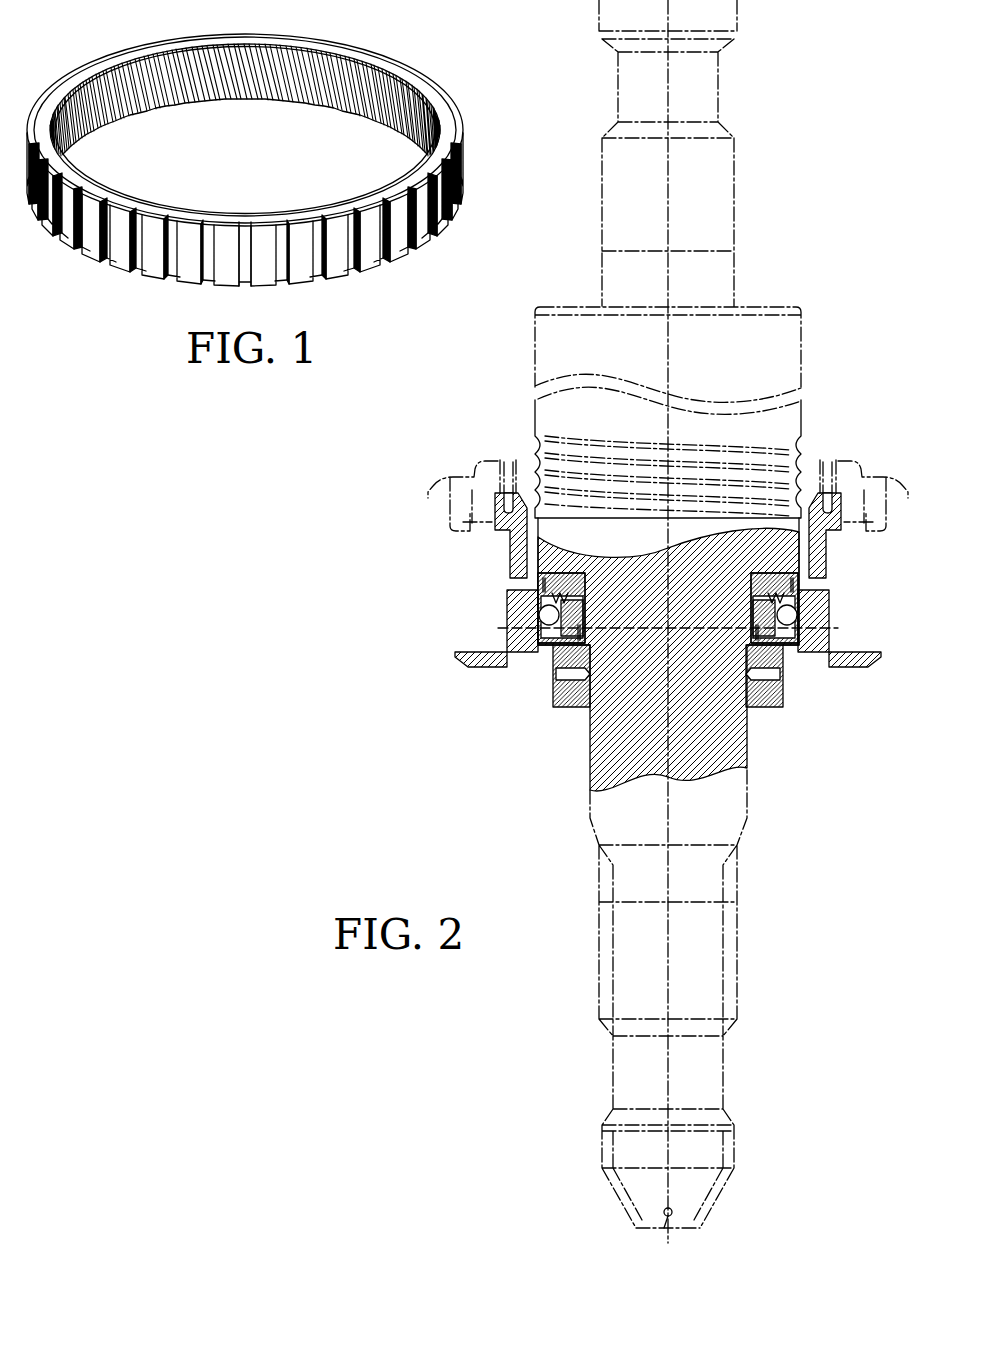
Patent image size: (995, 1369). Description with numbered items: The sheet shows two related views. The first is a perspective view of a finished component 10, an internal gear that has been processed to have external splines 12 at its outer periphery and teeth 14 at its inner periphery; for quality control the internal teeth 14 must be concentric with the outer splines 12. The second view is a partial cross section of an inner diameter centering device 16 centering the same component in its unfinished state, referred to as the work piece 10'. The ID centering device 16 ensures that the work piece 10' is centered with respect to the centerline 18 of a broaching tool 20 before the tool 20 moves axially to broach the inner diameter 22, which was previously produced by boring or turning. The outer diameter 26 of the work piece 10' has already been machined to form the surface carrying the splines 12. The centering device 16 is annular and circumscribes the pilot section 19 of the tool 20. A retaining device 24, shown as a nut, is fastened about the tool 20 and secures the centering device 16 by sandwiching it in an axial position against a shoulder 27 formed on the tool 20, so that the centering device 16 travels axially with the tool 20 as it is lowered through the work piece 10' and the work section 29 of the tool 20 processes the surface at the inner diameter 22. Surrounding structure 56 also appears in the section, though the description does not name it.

In FIG. 1, the finished component 10 is at (245, 122).
In FIG. 1, the splines 12 is at (431, 232).
In FIG. 1, the teeth 14 is at (232, 96).
In FIG. 2, the inner diameter centering device 16 is at (495, 625).
In FIG. 2, the centerline 18 is at (668, 987).
In FIG. 2, the pilot section 19 is at (727, 583).
In FIG. 2, the broaching tool 20 is at (806, 412).
In FIG. 2, the inner diameter 22 is at (535, 690).
In FIG. 2, the retaining device 24 is at (779, 707).
In FIG. 2, the outer diameter 26 is at (521, 647).
In FIG. 2, the shoulder 27 is at (537, 587).
In FIG. 2, the work section 29 is at (542, 470).
In FIG. 2, the housing 56 is at (510, 548).
In FIG. 2, the work piece 10' is at (860, 625).